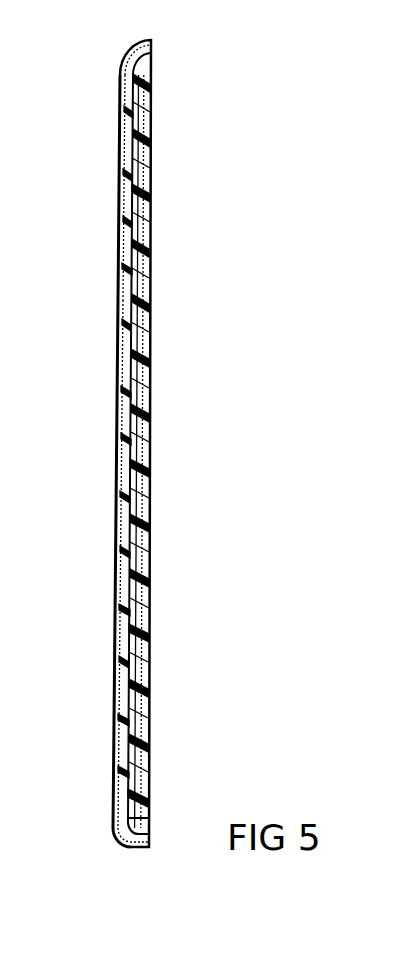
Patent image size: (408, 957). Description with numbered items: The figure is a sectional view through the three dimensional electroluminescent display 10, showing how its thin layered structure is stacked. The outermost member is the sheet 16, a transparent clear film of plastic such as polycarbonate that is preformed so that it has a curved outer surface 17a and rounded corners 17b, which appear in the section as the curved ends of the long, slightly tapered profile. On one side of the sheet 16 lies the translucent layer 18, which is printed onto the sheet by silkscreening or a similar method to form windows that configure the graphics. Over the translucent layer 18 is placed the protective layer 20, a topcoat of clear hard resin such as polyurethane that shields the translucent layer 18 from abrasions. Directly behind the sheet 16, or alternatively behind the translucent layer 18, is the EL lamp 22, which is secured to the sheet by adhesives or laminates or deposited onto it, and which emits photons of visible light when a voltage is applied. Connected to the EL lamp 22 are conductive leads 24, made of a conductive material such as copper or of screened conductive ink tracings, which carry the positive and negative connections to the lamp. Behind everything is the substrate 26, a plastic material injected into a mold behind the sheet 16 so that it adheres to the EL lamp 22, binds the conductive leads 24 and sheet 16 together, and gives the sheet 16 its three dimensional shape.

The three dimensional electroluminescent display 10 is at (208, 163).
The sheet 16 is at (134, 300).
The curved outer surface 17a is at (126, 252).
The rounded corners 17b is at (133, 845).
The translucent layer 18 is at (128, 337).
The protective layer 20 is at (137, 530).
The EL lamp 22 is at (140, 717).
The conductive leads 24 is at (138, 527).
The substrate 26 is at (140, 600).